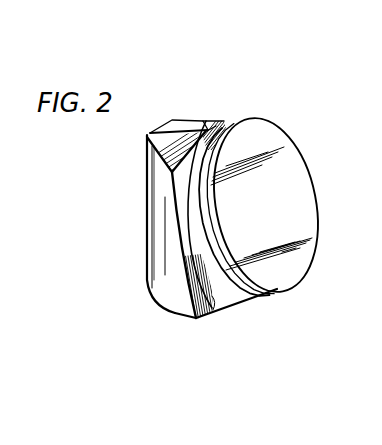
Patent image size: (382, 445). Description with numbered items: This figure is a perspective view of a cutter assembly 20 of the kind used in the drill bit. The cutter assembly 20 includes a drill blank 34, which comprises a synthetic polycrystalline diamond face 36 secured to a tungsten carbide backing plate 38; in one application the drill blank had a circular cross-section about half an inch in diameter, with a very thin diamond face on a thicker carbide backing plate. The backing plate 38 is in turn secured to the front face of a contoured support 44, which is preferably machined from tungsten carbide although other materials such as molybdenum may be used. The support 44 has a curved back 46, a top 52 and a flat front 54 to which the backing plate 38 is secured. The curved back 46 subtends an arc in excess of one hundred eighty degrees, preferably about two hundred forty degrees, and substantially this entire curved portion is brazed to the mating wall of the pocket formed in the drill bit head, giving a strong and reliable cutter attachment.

The cutter assembly 20 is at (246, 89).
The drill blank 34 is at (268, 316).
The synthetic polycrystalline diamond face 36 is at (258, 141).
The tungsten carbide backing plate 38 is at (203, 143).
The contoured support 44 is at (151, 323).
The curved back 46 is at (146, 272).
The top 52 is at (147, 137).
The flat front 54 is at (215, 320).